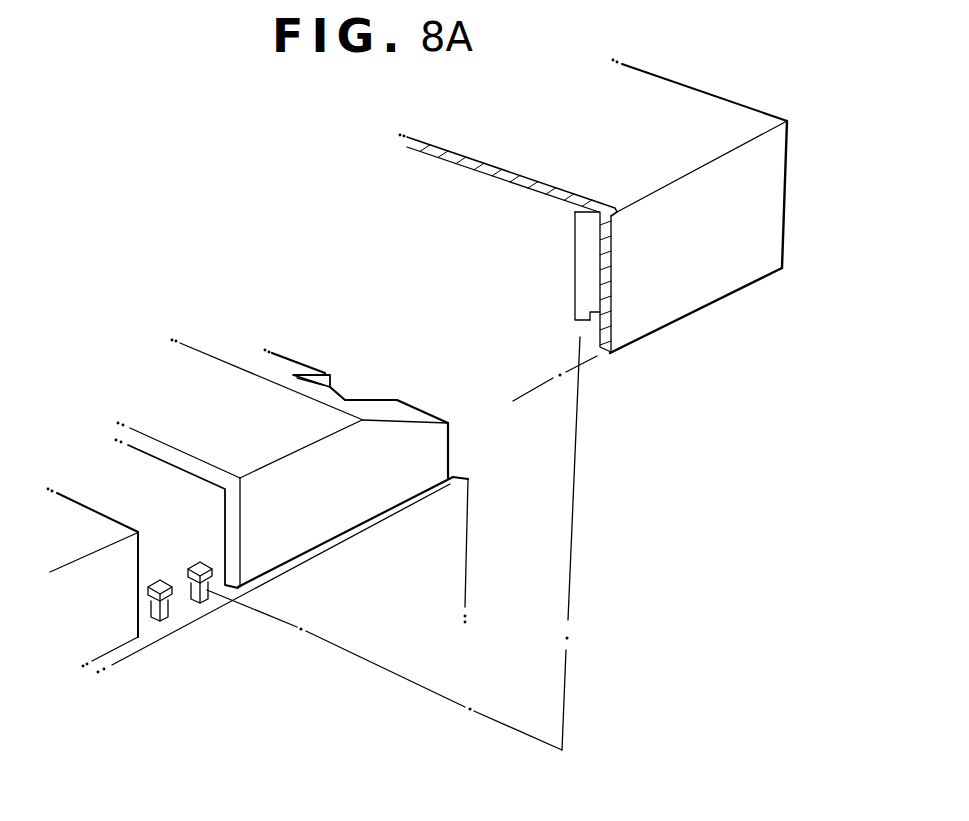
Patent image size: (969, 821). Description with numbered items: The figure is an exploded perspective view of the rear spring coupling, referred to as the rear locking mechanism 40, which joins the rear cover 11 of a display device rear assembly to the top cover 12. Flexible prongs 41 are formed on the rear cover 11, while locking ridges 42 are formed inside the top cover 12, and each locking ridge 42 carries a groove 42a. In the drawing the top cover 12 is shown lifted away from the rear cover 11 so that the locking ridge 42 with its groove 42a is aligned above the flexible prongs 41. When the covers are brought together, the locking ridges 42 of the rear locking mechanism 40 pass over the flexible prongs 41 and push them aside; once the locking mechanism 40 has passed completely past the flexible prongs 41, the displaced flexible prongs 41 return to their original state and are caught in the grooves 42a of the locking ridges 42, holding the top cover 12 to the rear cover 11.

The rear cover 11 is at (225, 397).
The top cover 12 is at (757, 230).
The rear spring coupling 40 is at (680, 620).
The flexible prongs 41 is at (202, 580).
The locking ridges 42 is at (583, 293).
The grooves 42a is at (588, 333).